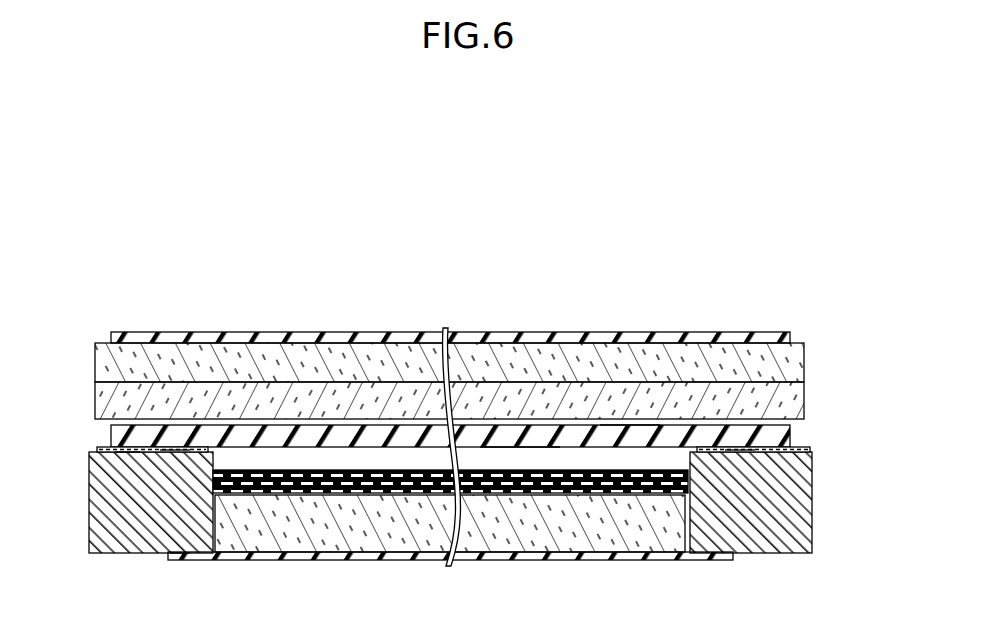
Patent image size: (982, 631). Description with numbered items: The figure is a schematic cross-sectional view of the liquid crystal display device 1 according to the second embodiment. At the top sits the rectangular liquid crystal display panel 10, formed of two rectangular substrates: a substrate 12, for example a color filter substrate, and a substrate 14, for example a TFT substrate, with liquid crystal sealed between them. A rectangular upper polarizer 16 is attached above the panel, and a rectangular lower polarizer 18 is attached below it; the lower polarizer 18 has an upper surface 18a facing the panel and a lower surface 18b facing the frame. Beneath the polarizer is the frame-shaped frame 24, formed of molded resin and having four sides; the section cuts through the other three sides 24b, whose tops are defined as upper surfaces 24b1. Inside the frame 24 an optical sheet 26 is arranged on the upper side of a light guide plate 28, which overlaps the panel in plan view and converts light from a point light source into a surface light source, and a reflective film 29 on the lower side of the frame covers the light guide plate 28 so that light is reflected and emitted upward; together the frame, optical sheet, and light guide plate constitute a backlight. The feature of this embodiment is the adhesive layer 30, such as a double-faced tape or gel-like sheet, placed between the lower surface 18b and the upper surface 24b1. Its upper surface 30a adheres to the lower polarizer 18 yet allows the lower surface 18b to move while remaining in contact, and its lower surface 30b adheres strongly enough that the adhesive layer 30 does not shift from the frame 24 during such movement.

The liquid crystal display device 1 is at (616, 240).
The liquid crystal display panel 10 is at (868, 350).
The substrate 12 is at (795, 363).
The substrate 14 is at (795, 404).
The upper polarizer 16 is at (761, 332).
The lower polarizer 18 is at (577, 437).
The upper surface of the lower polarizer 18a is at (619, 423).
The lower surface of the lower polarizer 18b is at (530, 446).
The frame 24 is at (443, 535).
The other three sides of the frame 24b is at (118, 535).
The upper surface of the frame side 24b1 is at (98, 449).
The optical sheet 26 is at (704, 478).
The light guide plate 28 is at (546, 540).
The reflective film 29 is at (703, 561).
The adhesive layer 30 is at (178, 452).
The upper surface of the adhesive layer 30a is at (178, 452).
The lower surface of the adhesive layer 30b is at (136, 447).